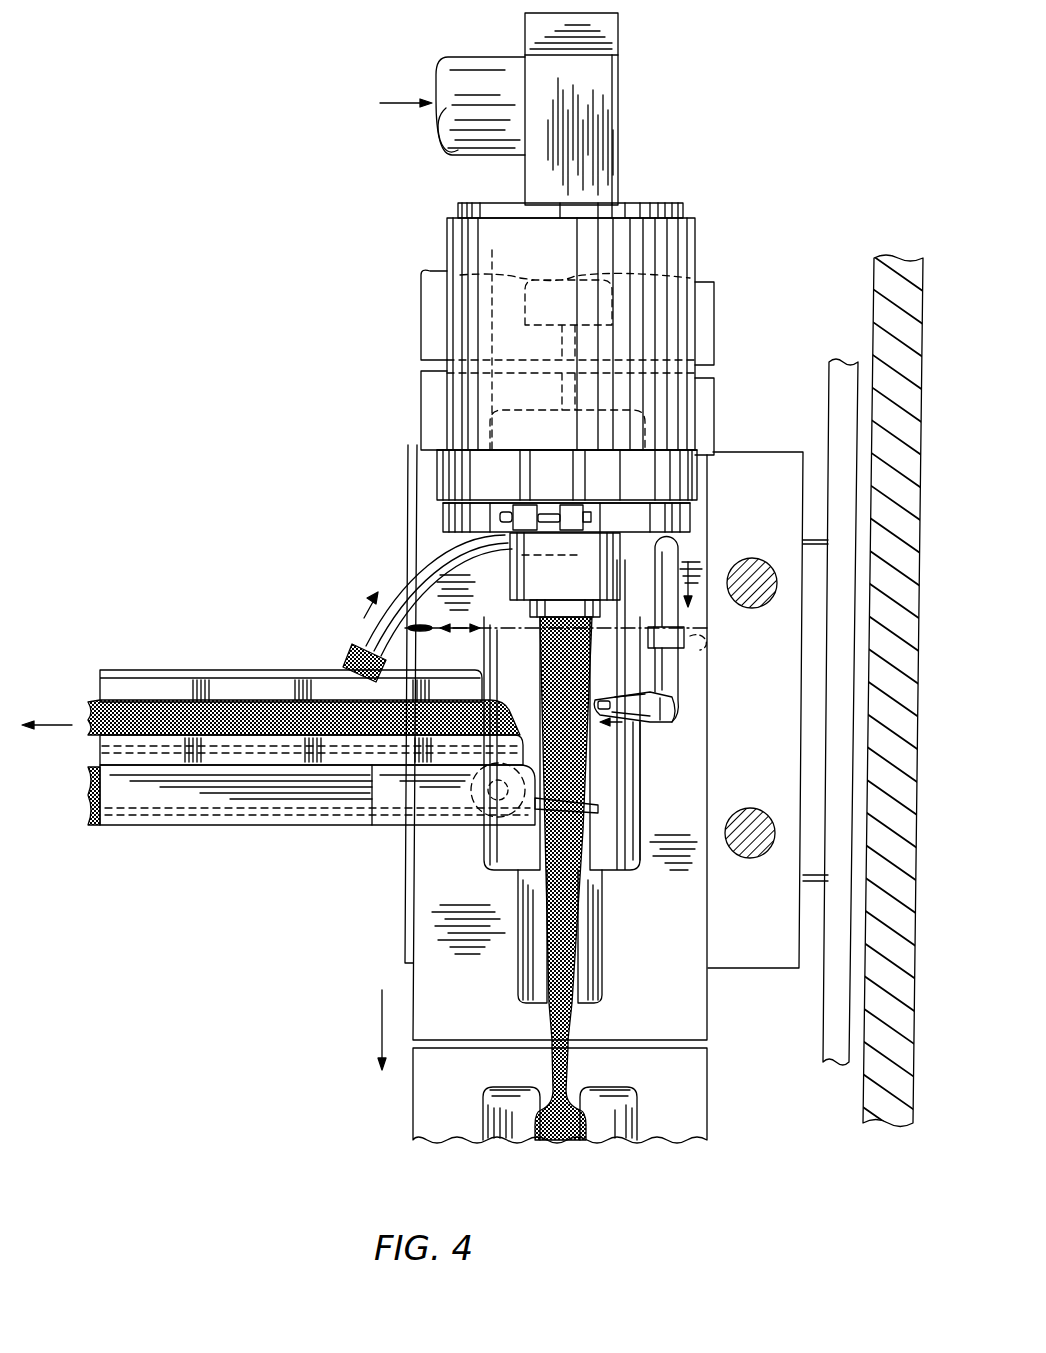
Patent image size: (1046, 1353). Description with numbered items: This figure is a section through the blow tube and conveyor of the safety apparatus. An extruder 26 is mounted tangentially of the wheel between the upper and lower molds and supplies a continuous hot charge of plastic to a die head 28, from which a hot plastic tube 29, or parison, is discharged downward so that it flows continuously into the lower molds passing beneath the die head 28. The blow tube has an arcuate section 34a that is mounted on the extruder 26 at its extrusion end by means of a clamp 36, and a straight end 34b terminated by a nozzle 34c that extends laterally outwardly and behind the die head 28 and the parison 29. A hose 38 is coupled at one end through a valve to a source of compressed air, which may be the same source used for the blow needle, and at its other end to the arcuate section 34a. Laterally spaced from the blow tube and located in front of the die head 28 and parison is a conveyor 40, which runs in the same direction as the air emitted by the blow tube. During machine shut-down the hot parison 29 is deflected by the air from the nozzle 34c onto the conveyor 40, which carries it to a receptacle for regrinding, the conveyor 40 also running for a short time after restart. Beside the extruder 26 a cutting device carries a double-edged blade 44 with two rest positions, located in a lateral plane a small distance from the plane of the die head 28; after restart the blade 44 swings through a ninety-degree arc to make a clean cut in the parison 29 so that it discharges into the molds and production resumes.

The extruder 26 is at (458, 322).
The die head 28 is at (563, 613).
The hot plastic tube (parison) 29 is at (536, 694).
The arcuate section 34a is at (683, 570).
The straight end 34b is at (704, 757).
The nozzle 34c is at (638, 740).
The clamp 36 is at (690, 528).
The hose 38 is at (356, 652).
The conveyor 40 is at (97, 700).
The double-edged blade 44 is at (420, 632).